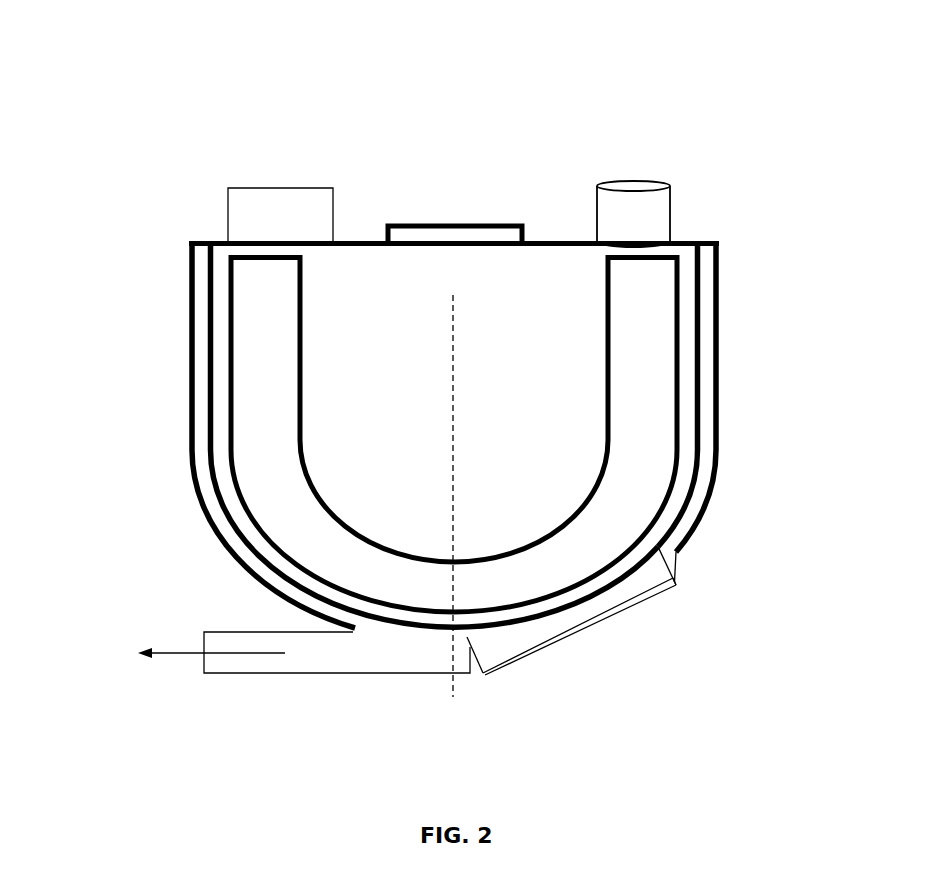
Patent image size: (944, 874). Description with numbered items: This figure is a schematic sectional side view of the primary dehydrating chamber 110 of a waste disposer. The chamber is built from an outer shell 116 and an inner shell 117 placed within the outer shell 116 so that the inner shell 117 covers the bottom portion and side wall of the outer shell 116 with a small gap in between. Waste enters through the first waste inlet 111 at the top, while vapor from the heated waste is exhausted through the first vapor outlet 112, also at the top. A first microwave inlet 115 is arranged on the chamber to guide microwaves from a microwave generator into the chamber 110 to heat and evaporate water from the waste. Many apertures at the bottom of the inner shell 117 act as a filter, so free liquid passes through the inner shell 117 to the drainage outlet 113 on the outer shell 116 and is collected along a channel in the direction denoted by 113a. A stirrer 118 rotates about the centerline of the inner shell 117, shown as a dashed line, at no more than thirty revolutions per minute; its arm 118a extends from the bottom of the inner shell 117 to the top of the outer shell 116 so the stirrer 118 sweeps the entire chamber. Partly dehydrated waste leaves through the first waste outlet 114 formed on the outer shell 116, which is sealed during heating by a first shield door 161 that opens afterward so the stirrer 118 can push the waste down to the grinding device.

The primary dehydrating chamber 110 is at (186, 131).
The first waste inlet 111 is at (487, 233).
The first vapor outlet 112 is at (637, 205).
The drainage outlet 113 is at (403, 638).
The drainage direction 113a is at (173, 653).
The first waste outlet 114 is at (653, 570).
The first microwave inlet 115 is at (323, 197).
The outer shell 116 is at (190, 307).
The inner shell 117 is at (205, 380).
The stirrer 118 is at (418, 594).
The arm 118a is at (640, 385).
The first shield door 161 is at (622, 610).